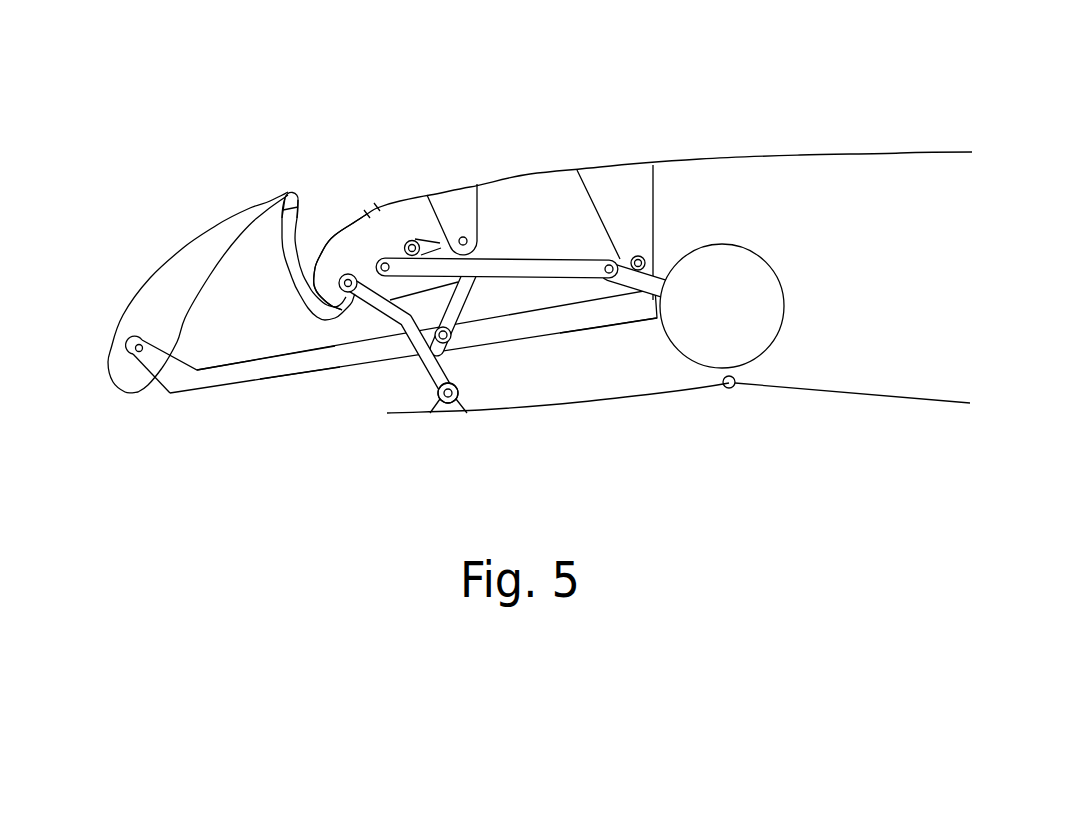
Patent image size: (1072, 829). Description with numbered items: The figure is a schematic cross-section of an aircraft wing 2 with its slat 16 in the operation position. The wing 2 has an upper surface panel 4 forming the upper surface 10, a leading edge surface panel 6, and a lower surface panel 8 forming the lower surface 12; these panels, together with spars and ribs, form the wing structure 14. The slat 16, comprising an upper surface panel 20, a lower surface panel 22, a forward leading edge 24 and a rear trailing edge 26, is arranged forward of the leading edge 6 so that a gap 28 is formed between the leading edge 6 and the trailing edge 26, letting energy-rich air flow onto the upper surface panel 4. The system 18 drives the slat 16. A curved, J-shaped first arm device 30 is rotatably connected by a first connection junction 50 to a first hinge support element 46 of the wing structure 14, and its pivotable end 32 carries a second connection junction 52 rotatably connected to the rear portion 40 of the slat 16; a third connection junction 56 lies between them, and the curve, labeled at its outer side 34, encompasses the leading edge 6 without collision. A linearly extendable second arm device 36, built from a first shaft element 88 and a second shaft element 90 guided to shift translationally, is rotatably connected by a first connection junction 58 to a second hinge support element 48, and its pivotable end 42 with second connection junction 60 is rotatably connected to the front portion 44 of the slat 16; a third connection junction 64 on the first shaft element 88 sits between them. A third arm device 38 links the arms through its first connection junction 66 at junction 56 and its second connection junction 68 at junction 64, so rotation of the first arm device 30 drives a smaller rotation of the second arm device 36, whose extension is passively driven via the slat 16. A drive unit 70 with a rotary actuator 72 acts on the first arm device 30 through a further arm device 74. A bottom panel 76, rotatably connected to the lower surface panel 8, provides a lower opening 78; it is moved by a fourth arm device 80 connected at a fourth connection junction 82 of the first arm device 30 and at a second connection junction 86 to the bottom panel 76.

The aircraft wing 2 is at (917, 85).
The upper surface panel 4 is at (814, 156).
The leading edge surface panel 6 is at (314, 257).
The lower surface panel 8 is at (880, 401).
The upper surface 10 is at (773, 156).
The lower surface 12 is at (942, 405).
The wing structure 14 is at (951, 155).
The slat 16 is at (141, 310).
The system 18 is at (298, 468).
The upper surface panel 20 is at (144, 283).
The lower surface panel 22 is at (188, 319).
The forward leading edge 24 is at (111, 387).
The rear trailing edge 26 is at (291, 185).
The gap 28 is at (301, 218).
The first arm device 30 is at (280, 227).
The pivotable end 32 is at (298, 192).
The inner track surface 34 is at (285, 285).
The second arm device 36 is at (652, 387).
The third arm device 38 is at (480, 302).
The rear portion 40 is at (285, 184).
The pivotable end 42 is at (133, 359).
The front portion 44 is at (144, 391).
The first hinge support element 46 is at (447, 208).
The second hinge support element 48 is at (608, 183).
The first connection junction 50 is at (484, 229).
The second connection junction 52 is at (290, 208).
The third connection junction 56 is at (408, 234).
The first connection junction 58 is at (638, 258).
The second connection junction 60 is at (128, 352).
The third connection junction 64 is at (455, 346).
The first connection junction 66 is at (401, 231).
The second connection junction 68 is at (387, 415).
The drive unit 70 is at (776, 230).
The rotary actuator 72 is at (790, 277).
The further arm device 74 is at (530, 253).
The bottom panel 76 is at (590, 337).
The lower opening 78 is at (331, 390).
The fourth arm device 80 is at (456, 378).
The fourth connection junction 82 is at (346, 268).
The second connection junction 86 is at (437, 393).
The first shaft element 88 is at (617, 337).
The second shaft element 90 is at (233, 391).